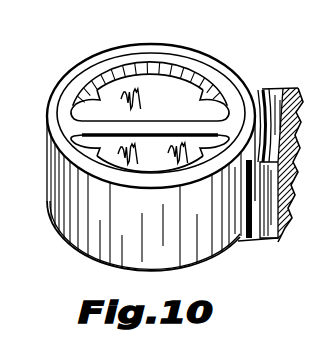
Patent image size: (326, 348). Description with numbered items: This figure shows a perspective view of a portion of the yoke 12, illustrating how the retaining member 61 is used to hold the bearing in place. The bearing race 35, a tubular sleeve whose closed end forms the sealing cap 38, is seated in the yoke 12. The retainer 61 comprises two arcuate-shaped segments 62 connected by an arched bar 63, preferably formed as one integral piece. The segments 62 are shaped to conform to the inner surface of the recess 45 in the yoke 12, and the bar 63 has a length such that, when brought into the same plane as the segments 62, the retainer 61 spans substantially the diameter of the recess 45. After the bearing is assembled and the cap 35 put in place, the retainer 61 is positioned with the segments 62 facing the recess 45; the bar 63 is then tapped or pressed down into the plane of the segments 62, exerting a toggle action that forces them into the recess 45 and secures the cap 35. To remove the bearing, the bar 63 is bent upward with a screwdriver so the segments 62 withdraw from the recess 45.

The yoke 12 is at (97, 242).
The external bearing race 35 is at (222, 250).
The sealing cap 38 is at (152, 92).
The recess 45 is at (205, 67).
The retaining member 61 is at (163, 133).
The arcuate-shaped segments 62 is at (82, 108).
The arched bar 63 is at (137, 125).